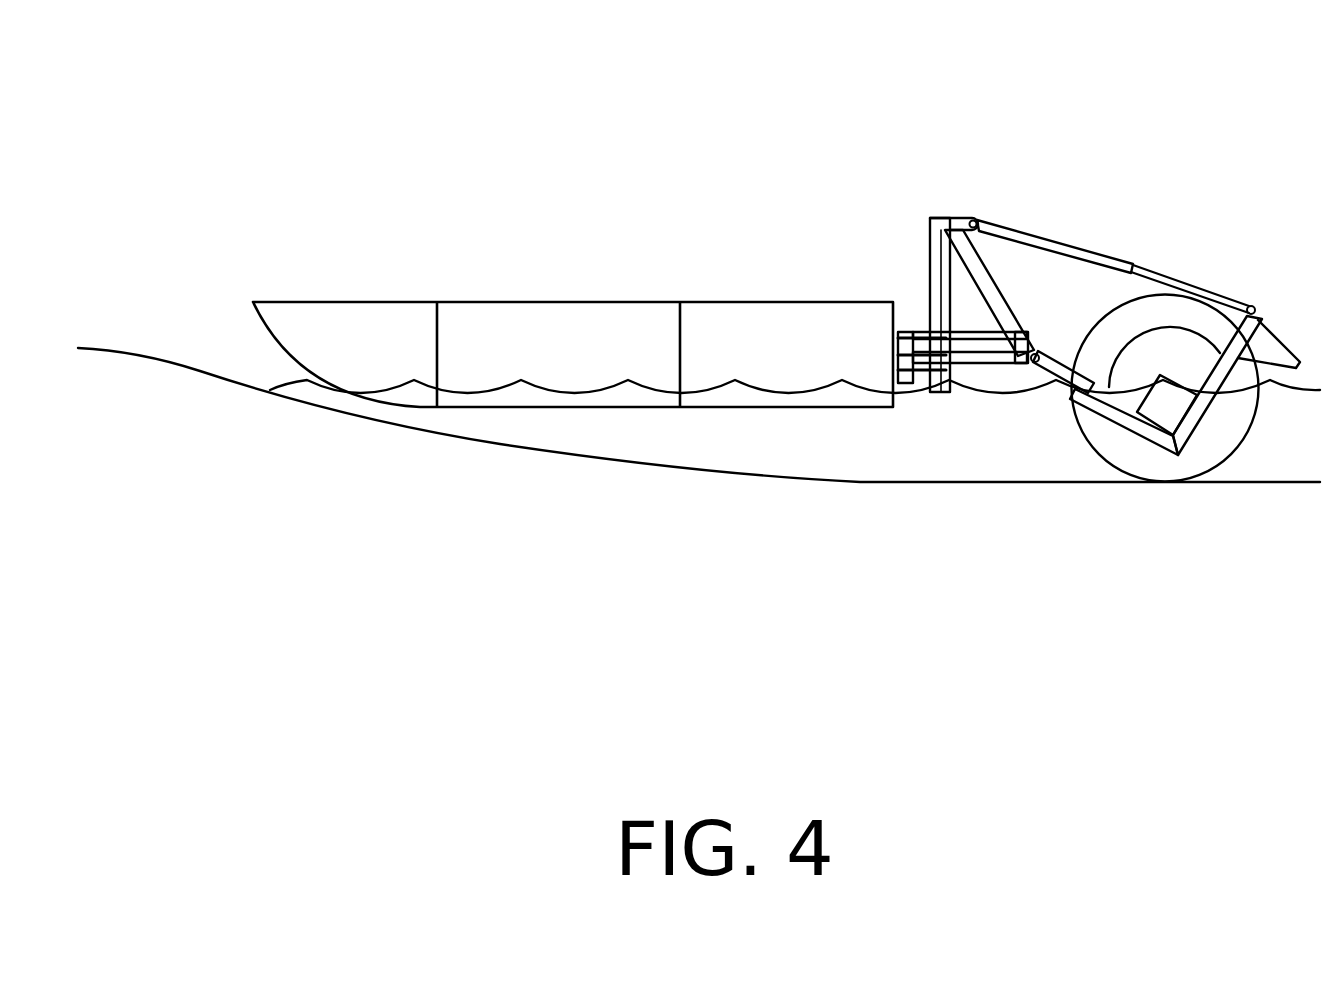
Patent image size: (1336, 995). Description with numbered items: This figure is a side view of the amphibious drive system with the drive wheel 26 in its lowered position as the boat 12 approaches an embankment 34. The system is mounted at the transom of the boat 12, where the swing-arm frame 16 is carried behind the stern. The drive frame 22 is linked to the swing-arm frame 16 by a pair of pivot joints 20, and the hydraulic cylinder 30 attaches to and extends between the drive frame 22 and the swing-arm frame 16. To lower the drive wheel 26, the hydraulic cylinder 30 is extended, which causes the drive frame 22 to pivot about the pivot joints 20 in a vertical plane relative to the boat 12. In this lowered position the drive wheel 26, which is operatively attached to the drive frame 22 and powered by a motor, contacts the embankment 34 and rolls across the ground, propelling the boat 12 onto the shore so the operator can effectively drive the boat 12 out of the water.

The boat 12 is at (577, 338).
The swing-arm frame 16 is at (965, 263).
The pivot joints 20 is at (1033, 363).
The drive frame 22 is at (1240, 348).
The drive wheel 26 is at (1153, 453).
The hydraulic cylinder 30 is at (1088, 258).
The embankment 34 is at (195, 370).